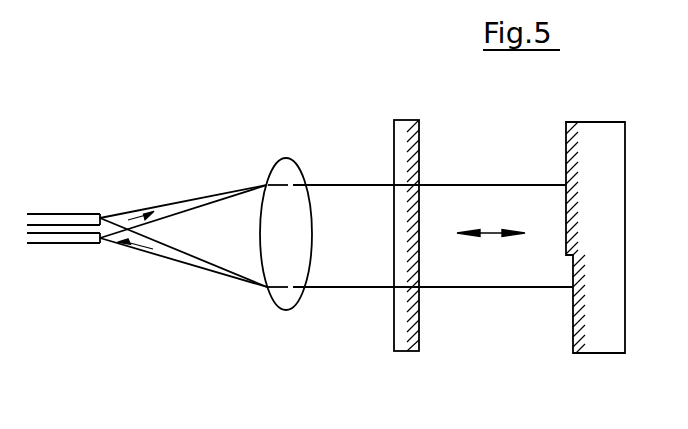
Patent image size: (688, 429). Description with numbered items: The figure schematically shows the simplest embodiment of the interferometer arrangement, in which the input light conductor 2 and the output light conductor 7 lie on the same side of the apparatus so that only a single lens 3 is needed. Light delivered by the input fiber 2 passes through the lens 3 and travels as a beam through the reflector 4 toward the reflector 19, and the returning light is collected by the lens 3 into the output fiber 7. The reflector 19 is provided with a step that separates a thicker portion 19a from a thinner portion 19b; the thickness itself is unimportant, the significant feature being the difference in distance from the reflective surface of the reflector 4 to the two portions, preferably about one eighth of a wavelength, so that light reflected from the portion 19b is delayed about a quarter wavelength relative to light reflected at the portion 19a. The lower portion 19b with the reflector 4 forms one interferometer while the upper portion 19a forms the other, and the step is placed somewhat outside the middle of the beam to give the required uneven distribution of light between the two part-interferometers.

The input light conductor 2 is at (78, 214).
The output light conductor 7 is at (76, 244).
The lens 3 is at (277, 164).
The reflector 4 is at (401, 119).
The reflector 19 is at (598, 220).
The thicker portion 19a is at (594, 188).
The thinner portion 19b is at (602, 304).